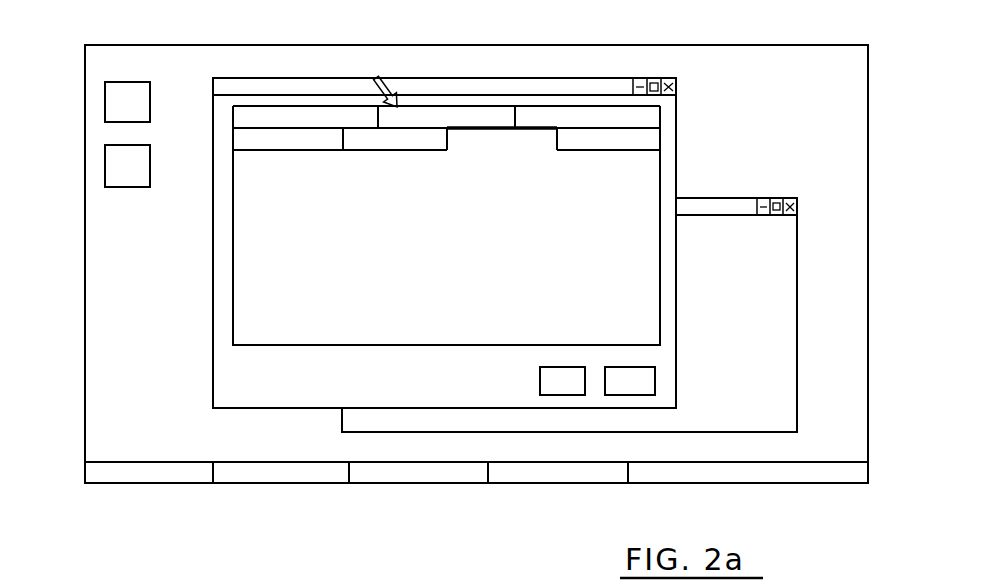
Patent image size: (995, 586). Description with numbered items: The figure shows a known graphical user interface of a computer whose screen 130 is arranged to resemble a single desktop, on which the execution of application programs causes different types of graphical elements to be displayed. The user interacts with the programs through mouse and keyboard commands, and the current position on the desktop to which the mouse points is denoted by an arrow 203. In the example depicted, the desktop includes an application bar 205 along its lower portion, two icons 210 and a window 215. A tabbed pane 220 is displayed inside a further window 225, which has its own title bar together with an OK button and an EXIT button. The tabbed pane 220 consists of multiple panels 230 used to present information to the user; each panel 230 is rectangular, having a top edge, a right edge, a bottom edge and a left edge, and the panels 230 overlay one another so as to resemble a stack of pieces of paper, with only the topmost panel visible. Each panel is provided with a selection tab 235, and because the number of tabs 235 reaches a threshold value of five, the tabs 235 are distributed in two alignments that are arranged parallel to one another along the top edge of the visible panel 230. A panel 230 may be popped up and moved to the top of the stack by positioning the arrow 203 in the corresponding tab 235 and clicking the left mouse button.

The screen 130 is at (838, 95).
The arrow 203 is at (400, 100).
The application bar 205 is at (203, 470).
The icons 210 is at (107, 160).
The window 215 is at (776, 320).
The tabbed pane 220 is at (307, 352).
The further window 225 is at (678, 157).
The panel 230 is at (242, 258).
The selection tab 235 is at (527, 142).